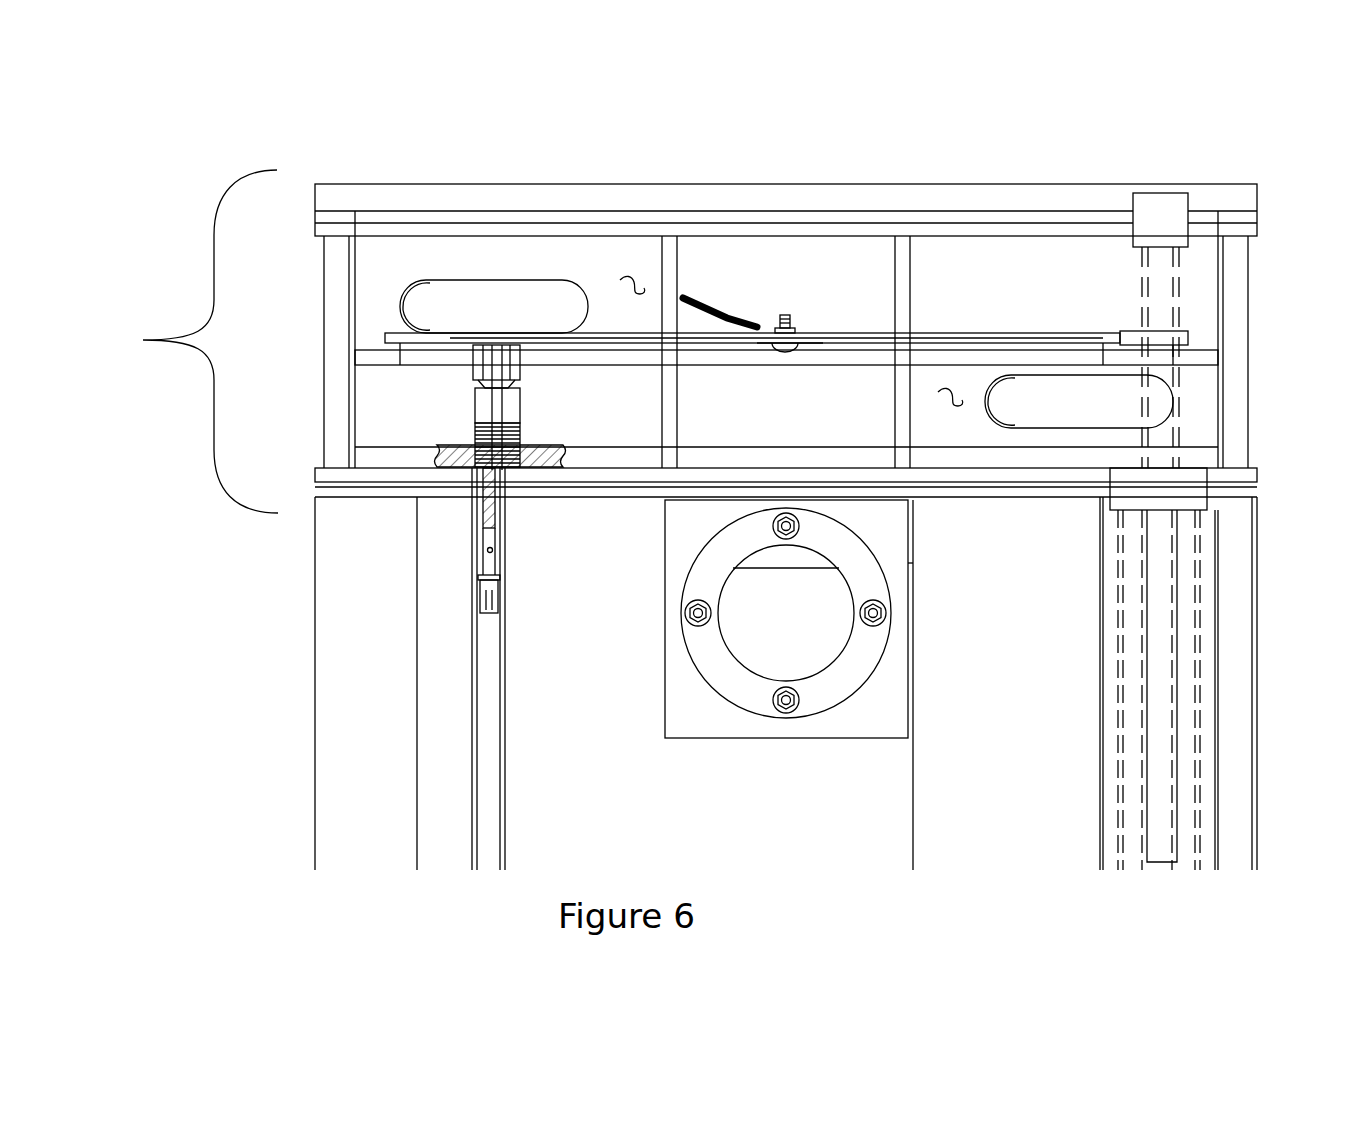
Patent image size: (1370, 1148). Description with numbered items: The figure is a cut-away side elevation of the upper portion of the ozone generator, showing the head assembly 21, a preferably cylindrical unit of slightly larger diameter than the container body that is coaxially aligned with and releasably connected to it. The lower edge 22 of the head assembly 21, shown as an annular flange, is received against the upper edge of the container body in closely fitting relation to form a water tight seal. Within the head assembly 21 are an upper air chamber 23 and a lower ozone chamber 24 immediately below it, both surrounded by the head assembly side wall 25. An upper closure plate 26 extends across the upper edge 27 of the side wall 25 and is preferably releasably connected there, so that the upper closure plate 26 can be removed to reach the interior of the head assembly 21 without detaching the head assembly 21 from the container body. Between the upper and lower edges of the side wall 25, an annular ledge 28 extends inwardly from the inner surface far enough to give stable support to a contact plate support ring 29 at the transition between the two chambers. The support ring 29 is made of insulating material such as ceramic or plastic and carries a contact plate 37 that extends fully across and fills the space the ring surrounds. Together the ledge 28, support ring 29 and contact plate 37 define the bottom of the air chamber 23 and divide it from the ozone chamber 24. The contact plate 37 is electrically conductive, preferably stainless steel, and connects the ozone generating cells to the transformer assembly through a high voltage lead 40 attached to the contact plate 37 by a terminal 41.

The head assembly 21 is at (673, 341).
The lower edge 22 is at (400, 480).
The air chamber 23 is at (637, 282).
The ozone chamber 24 is at (952, 387).
The head assembly side wall 25 is at (1218, 325).
The upper closure plate 26 is at (432, 182).
The upper edge 27 is at (352, 208).
The annular ledge 28 is at (375, 367).
The contact plate support ring 29 is at (380, 330).
The contact plate 37 is at (608, 333).
The high voltage lead 40 is at (738, 307).
The terminal 41 is at (798, 327).